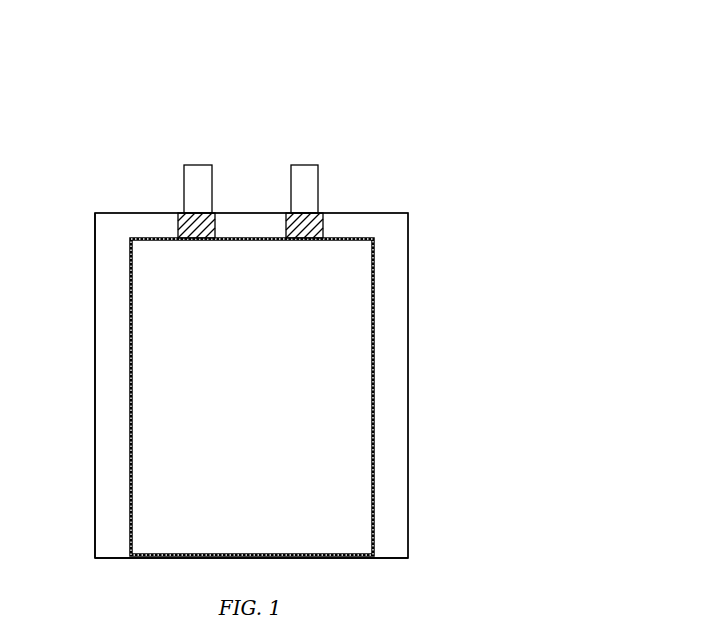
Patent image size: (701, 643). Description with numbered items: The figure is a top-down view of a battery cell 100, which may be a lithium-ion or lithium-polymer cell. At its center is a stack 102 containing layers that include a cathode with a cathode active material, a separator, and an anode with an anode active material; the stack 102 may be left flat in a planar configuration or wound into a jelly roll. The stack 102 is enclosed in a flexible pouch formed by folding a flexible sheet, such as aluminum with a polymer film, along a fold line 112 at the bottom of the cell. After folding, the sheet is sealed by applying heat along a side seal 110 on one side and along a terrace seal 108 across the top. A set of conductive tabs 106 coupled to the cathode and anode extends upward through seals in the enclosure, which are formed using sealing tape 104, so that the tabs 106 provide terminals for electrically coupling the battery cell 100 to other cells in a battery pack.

The battery cell 100 is at (95, 213).
The stack 102 is at (252, 397).
The sealing tape 104 is at (297, 241).
The conductive tabs 106 is at (291, 165).
The terrace seal 108 is at (340, 212).
The side seal 110 is at (95, 382).
The fold line 112 is at (297, 556).